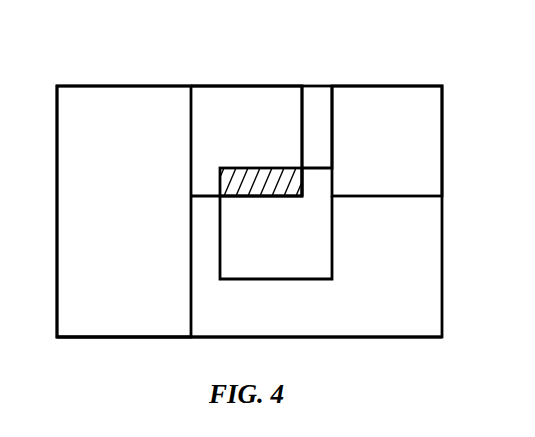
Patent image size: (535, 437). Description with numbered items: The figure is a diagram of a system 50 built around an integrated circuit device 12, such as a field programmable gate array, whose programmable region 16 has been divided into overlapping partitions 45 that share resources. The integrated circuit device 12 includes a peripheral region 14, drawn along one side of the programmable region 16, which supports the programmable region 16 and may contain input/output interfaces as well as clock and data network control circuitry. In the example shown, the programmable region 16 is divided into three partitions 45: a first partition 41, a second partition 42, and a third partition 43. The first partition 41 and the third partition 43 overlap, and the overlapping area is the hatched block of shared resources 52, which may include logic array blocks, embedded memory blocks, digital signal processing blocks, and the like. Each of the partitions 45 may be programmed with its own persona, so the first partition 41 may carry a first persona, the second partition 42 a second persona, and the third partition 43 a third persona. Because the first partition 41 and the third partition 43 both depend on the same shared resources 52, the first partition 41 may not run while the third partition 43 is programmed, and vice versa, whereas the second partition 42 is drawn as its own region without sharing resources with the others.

The integrated circuit device 12 is at (443, 266).
The peripheral region 14 is at (125, 88).
The programmable region 16 is at (432, 332).
The first partition 41 is at (292, 88).
The second partition 42 is at (380, 88).
The third partition 43 is at (272, 274).
The partitions 45 is at (215, 88).
The structure assembly 50 is at (412, 53).
The shared resources 52 is at (270, 167).